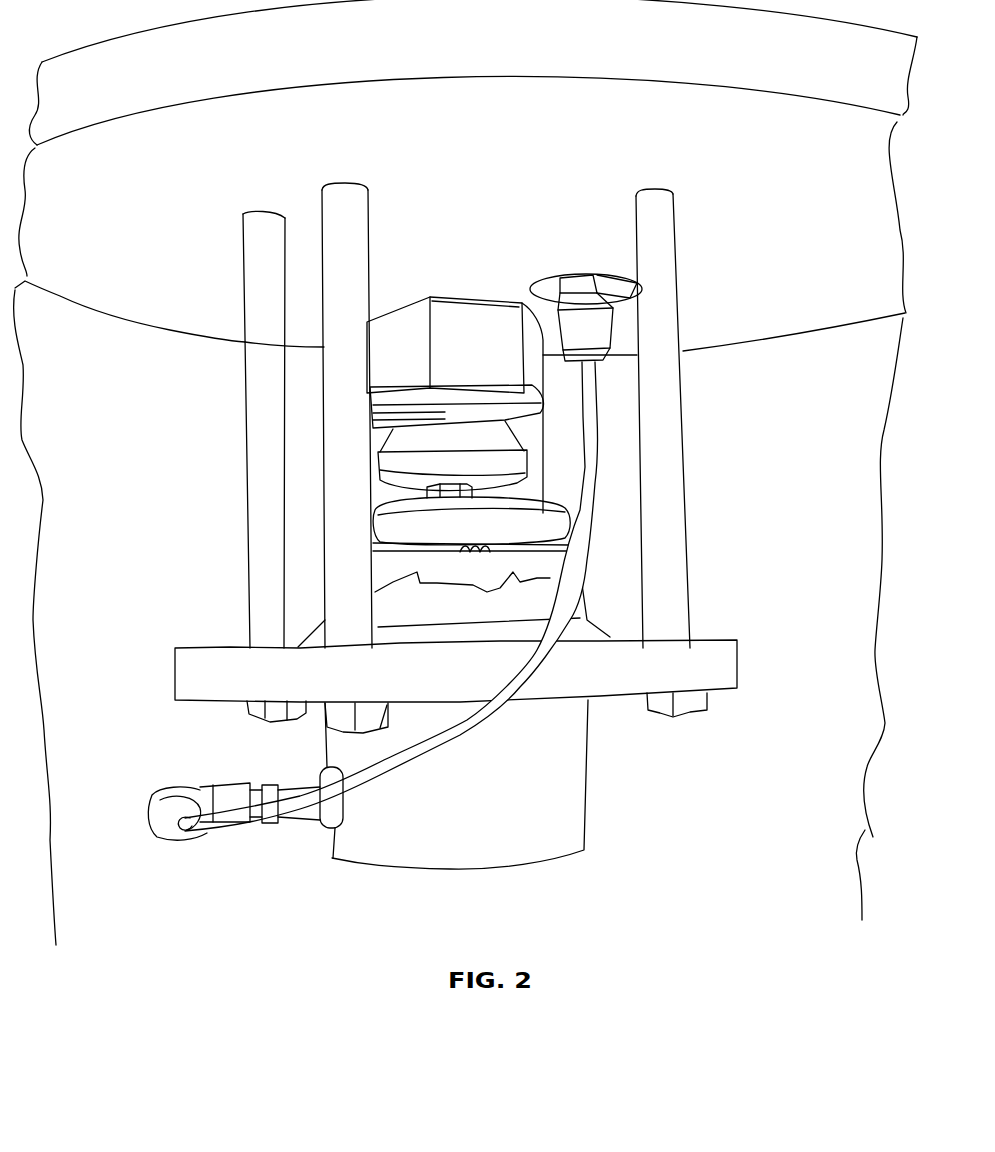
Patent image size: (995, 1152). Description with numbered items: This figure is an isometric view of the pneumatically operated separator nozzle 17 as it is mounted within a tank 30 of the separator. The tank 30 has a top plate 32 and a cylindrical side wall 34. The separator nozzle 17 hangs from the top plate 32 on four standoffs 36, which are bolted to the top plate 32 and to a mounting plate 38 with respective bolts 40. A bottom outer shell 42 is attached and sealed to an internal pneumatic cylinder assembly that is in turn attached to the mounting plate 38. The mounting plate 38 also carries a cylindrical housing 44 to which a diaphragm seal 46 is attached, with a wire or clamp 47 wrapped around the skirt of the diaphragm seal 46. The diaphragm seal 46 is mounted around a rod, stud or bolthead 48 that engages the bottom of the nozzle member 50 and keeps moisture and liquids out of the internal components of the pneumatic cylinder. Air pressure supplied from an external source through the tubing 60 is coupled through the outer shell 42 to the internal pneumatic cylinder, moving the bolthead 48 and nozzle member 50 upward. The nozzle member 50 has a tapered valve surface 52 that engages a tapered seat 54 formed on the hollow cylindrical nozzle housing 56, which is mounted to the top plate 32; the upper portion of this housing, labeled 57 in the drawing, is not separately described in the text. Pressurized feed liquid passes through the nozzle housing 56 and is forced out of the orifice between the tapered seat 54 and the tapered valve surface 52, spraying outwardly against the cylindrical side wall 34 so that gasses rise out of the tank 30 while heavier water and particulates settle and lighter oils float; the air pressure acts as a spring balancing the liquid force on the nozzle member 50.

The separator nozzle 17 is at (575, 427).
The tank 30 is at (465, 472).
The top plate 32 is at (412, 117).
The cylindrical side wall 34 is at (98, 479).
The standoffs 36 is at (248, 425).
The mounting plate 38 is at (738, 663).
The bolts 40 is at (247, 713).
The bottom outer shell 42 is at (590, 800).
The cylindrical housing 44 is at (587, 612).
The diaphragm seal 46 is at (548, 527).
The wire or clamp 47 is at (430, 553).
The bolthead 48 is at (453, 490).
The nozzle member 50 is at (407, 463).
The tapered valve surface 52 is at (463, 428).
The tapered seat 54 is at (393, 427).
The cylindrical nozzle housing 56 is at (434, 362).
The pump housing 57 is at (445, 328).
The tubing 60 is at (470, 723).